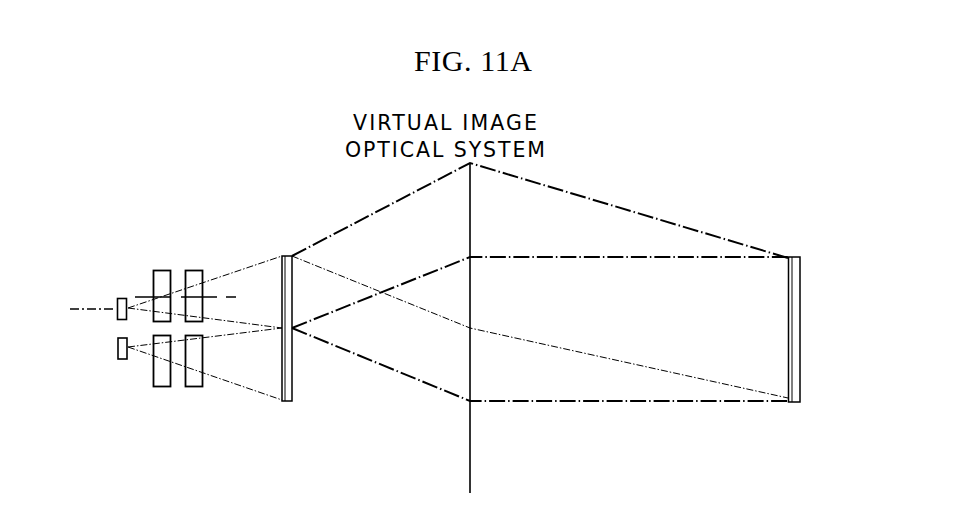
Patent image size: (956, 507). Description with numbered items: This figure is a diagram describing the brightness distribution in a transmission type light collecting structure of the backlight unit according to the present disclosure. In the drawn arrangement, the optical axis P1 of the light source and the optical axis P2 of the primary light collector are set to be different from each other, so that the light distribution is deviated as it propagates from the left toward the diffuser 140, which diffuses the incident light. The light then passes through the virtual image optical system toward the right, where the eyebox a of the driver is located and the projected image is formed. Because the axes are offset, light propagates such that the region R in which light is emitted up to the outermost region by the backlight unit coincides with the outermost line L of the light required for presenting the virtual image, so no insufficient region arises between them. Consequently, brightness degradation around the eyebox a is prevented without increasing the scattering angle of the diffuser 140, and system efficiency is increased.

The diffuser 140 is at (285, 402).
The optical axis of the light source P1 is at (87, 307).
The optical axis of the primary light collector P2 is at (215, 297).
The outermost line of the light required for presenting the virtual image L is at (540, 281).
The region in which the light is emitted up to the outermost region R is at (658, 220).
The eyebox a is at (788, 378).